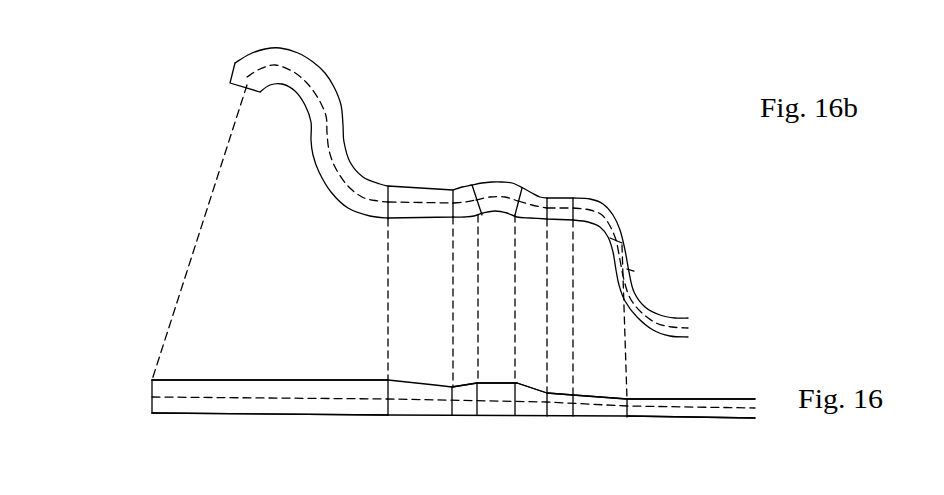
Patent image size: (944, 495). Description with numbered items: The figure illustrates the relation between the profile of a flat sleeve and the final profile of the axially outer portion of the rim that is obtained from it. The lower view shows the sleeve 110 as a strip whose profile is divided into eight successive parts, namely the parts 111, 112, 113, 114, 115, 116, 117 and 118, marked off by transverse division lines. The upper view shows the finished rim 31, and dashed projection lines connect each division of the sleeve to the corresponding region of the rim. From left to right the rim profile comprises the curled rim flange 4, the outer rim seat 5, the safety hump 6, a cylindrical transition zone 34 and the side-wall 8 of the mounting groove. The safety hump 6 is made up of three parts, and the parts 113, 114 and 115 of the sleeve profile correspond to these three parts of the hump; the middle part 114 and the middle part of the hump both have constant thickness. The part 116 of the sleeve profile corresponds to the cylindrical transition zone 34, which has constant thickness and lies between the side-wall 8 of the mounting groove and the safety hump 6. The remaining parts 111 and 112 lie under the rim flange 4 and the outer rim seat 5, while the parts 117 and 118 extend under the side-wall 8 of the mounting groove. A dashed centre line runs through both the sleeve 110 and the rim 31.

In FIG. 16B, the rim flange 4 is at (270, 65).
In FIG. 16B, the outer rim seat 5 is at (420, 193).
In FIG. 16B, the safety hump 6 is at (491, 183).
In FIG. 16B, the cylindrical transition zone 34 is at (560, 196).
In FIG. 16B, the side-wall of the mounting groove 8 is at (621, 270).
In FIG. 16B, the rim 31 is at (253, 140).
In FIG. 16A, the sleeve 110 is at (218, 348).
In FIG. 16A, the first part of the sleeve profile 111 is at (210, 398).
In FIG. 16A, the second part of the sleeve profile 112 is at (400, 413).
In FIG. 16A, the third part of the sleeve profile 113 is at (465, 408).
In FIG. 16A, the fourth part of the sleeve profile 114 is at (492, 410).
In FIG. 16A, the fifth part of the sleeve profile 115 is at (527, 407).
In FIG. 16A, the sixth part of the sleeve profile 116 is at (558, 410).
In FIG. 16A, the seventh part of the sleeve profile 117 is at (598, 410).
In FIG. 16A, the eighth part of the sleeve profile 118 is at (673, 408).